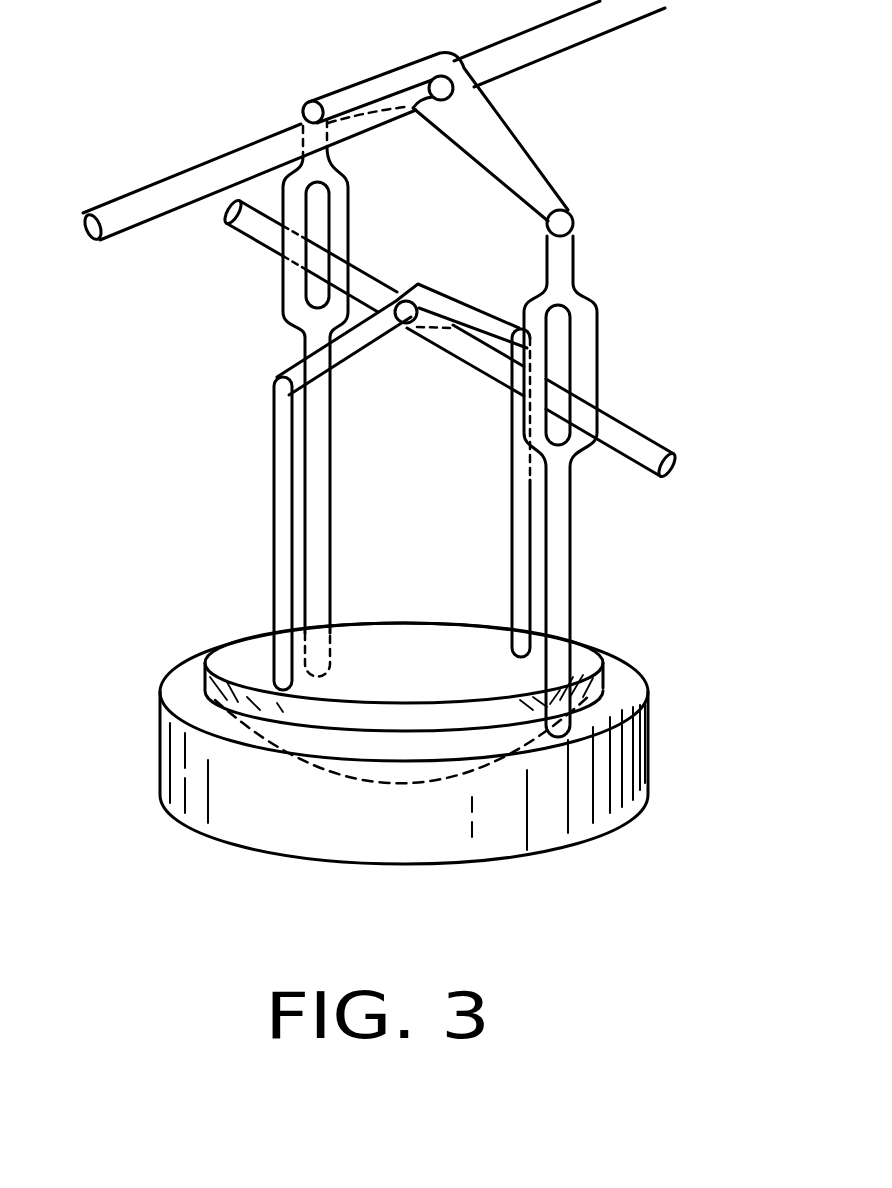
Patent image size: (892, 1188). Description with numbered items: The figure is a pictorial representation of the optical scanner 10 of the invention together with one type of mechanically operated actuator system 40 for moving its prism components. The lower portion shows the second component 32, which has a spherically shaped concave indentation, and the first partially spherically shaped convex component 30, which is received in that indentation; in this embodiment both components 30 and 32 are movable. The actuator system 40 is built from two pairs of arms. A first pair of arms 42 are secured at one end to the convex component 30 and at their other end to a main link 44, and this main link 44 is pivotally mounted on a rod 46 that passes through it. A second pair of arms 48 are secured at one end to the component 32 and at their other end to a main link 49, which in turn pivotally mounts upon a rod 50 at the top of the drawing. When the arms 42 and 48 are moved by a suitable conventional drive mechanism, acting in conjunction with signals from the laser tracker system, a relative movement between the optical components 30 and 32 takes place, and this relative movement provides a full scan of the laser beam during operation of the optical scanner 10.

The optical scanner 10 is at (408, 456).
The first movable partially spherically-shaped convex component 30 is at (238, 664).
The second component 32 is at (163, 790).
The mechanically operated actuator system 40 is at (471, 395).
The first pair of arms 42 is at (276, 484).
The main link 44 is at (452, 298).
The rod 46 is at (660, 447).
The second pair of arms 48 is at (334, 432).
The main link 49 is at (518, 132).
The rod 50 is at (656, 2).